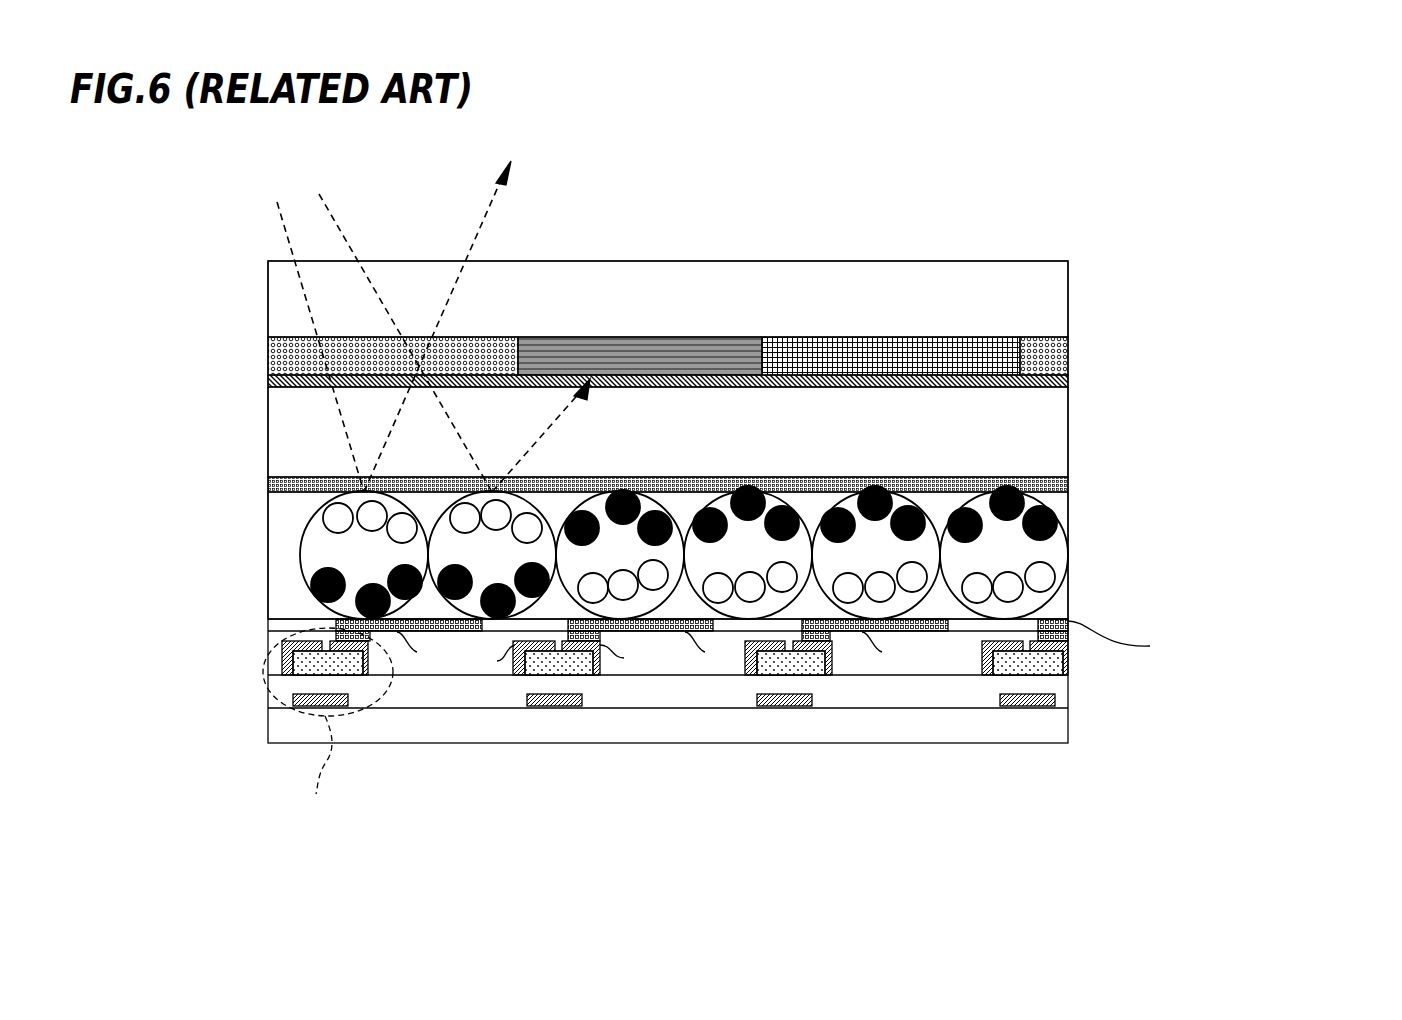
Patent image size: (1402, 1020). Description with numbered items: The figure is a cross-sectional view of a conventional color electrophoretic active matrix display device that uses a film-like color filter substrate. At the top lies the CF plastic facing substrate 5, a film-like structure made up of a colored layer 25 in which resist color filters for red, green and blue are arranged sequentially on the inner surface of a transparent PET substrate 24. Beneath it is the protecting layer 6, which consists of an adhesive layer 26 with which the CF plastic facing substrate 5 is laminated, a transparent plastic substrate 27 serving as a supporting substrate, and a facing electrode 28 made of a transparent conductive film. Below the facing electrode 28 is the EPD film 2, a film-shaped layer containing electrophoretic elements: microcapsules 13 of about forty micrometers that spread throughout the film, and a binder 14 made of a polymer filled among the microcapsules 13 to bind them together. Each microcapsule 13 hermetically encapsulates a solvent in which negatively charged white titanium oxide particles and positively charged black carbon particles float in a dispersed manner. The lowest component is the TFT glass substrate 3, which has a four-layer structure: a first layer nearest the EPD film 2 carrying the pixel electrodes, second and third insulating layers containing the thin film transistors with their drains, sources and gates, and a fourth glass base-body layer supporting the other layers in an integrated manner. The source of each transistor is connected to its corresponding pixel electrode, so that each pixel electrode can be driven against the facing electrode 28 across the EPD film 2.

The EPD film 2 is at (707, 584).
The TFT glass substrate 3 is at (262, 635).
The CF plastic facing substrate 5 is at (707, 320).
The protecting layer 6 is at (716, 443).
The microcapsules 13 is at (300, 580).
The binder 14 is at (292, 527).
The PET substrate 24 is at (1068, 303).
The colored layer 25 is at (1068, 355).
The adhesive layer 26 is at (1068, 385).
The transparent plastic substrate 27 is at (1068, 430).
The facing electrode 28 is at (1068, 478).